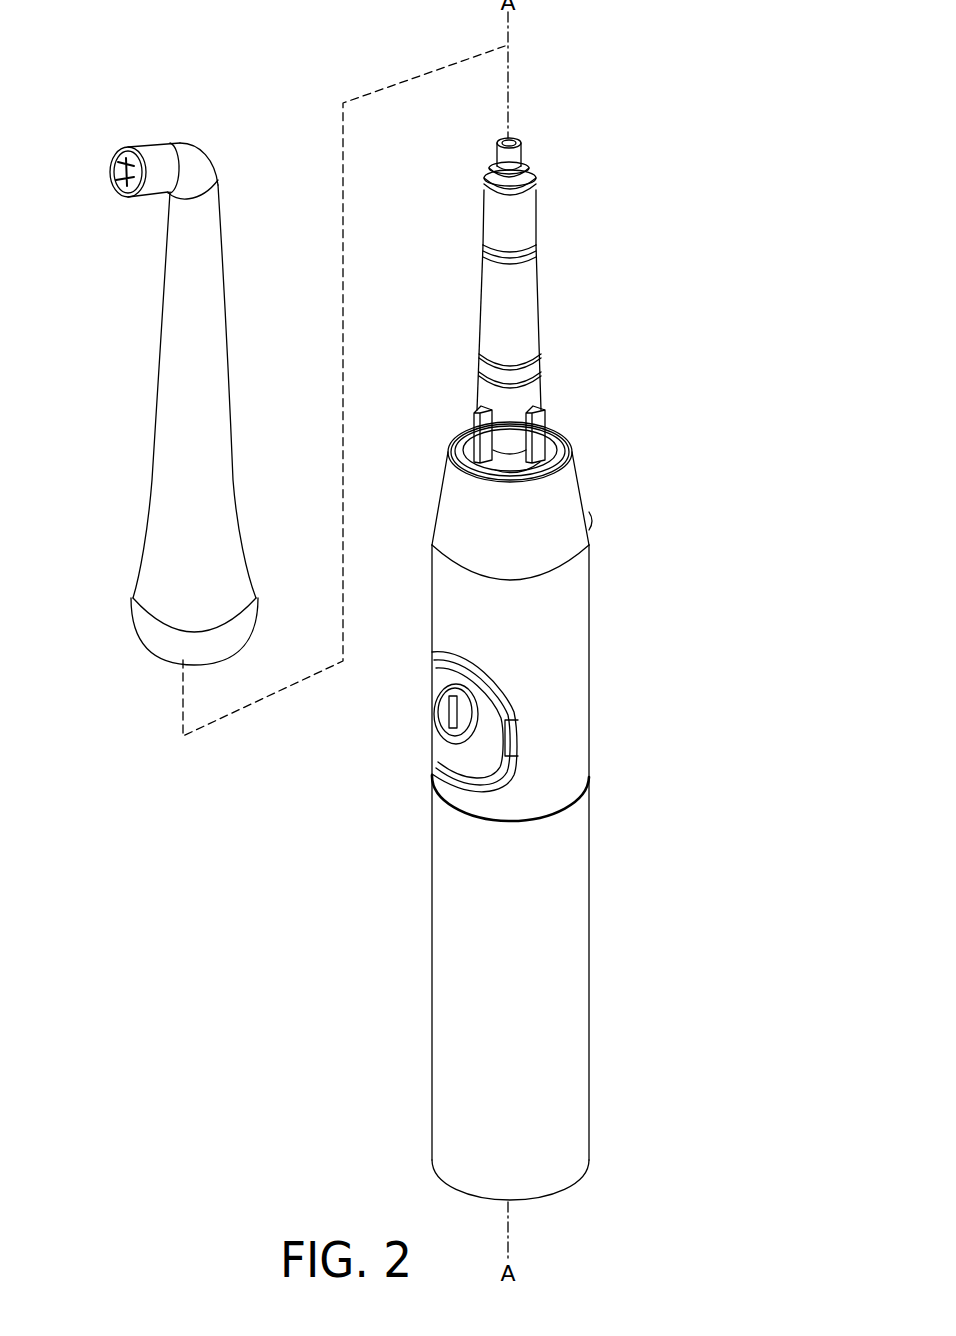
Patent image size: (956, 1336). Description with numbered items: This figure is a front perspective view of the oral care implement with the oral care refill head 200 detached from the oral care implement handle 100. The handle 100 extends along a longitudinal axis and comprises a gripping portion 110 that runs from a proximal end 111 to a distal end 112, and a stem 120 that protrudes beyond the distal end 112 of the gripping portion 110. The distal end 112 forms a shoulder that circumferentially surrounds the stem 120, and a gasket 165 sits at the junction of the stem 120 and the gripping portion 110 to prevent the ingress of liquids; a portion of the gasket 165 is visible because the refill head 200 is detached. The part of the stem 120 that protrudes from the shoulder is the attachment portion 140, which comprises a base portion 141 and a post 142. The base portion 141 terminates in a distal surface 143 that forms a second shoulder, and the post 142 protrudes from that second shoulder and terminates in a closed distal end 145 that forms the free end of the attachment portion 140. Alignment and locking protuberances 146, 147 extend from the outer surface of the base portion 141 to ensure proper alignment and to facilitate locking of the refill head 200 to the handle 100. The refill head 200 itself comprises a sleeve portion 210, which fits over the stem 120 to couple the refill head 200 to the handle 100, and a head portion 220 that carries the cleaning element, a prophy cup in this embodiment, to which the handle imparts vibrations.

The oral care implement handle 100 is at (567, 634).
The gripping portion 110 is at (548, 603).
The proximal end 111 is at (510, 1202).
The distal end 112 is at (562, 436).
The stem 120 is at (555, 327).
The attachment portion 140 is at (575, 158).
The base portion 141 is at (525, 277).
The post 142 is at (517, 160).
The distal surface 143 is at (525, 184).
The closed distal end 145 is at (514, 140).
The alignment and locking protuberance 146 is at (487, 405).
The alignment and locking protuberance 147 is at (541, 430).
The gasket 165 is at (508, 467).
The oral care refill head 200 is at (150, 375).
The sleeve portion 210 is at (192, 415).
The head portion 220 is at (222, 150).